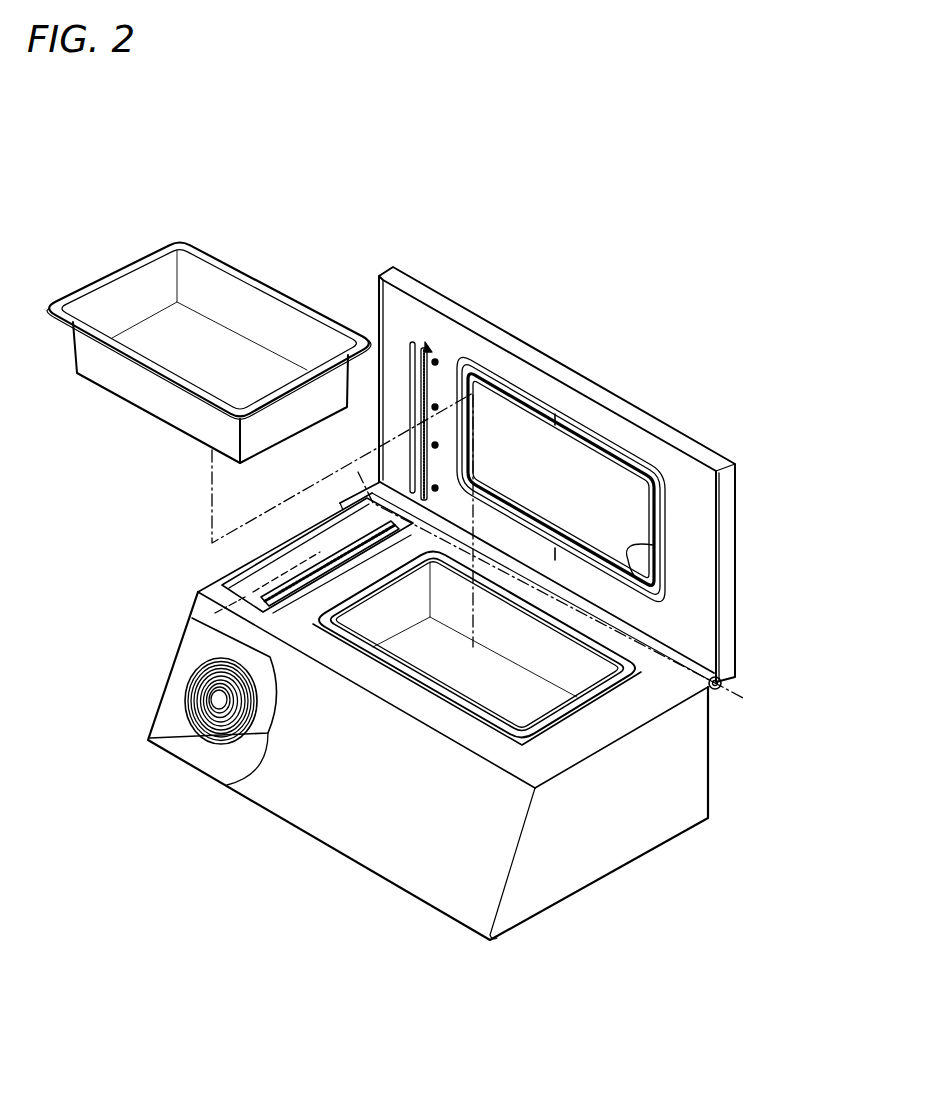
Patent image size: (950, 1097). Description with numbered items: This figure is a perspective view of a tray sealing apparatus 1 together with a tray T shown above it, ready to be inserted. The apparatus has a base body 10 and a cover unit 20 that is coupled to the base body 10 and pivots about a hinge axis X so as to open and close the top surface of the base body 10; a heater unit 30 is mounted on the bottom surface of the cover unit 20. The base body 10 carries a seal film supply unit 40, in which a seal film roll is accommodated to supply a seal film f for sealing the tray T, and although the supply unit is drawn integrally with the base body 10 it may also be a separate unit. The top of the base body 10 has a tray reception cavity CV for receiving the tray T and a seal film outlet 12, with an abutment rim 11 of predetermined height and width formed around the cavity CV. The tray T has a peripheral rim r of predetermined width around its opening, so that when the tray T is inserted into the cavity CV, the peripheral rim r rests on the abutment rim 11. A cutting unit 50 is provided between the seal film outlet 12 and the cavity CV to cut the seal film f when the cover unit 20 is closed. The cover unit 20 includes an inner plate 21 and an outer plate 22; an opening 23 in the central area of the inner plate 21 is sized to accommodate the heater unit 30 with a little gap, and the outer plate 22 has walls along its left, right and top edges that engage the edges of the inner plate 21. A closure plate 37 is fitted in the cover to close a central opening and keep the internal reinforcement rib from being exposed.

The tray sealing apparatus 1 is at (333, 202).
The base body 10 is at (407, 833).
The abutment rim 11 is at (605, 652).
The seal film outlet 12 is at (333, 552).
The cover unit 20 is at (647, 392).
The inner plate 21 is at (676, 480).
The outer plate 22 is at (583, 387).
The opening 23 is at (597, 433).
The heater unit 30 is at (487, 397).
The closure plate 37 is at (645, 585).
The seal film supply unit 40 is at (191, 748).
The cutting unit 50 is at (440, 498).
The tray T is at (112, 373).
The peripheral rim r is at (123, 268).
The seal film f is at (190, 650).
The hinge axis X is at (748, 702).
The tray reception cavity CV is at (515, 707).